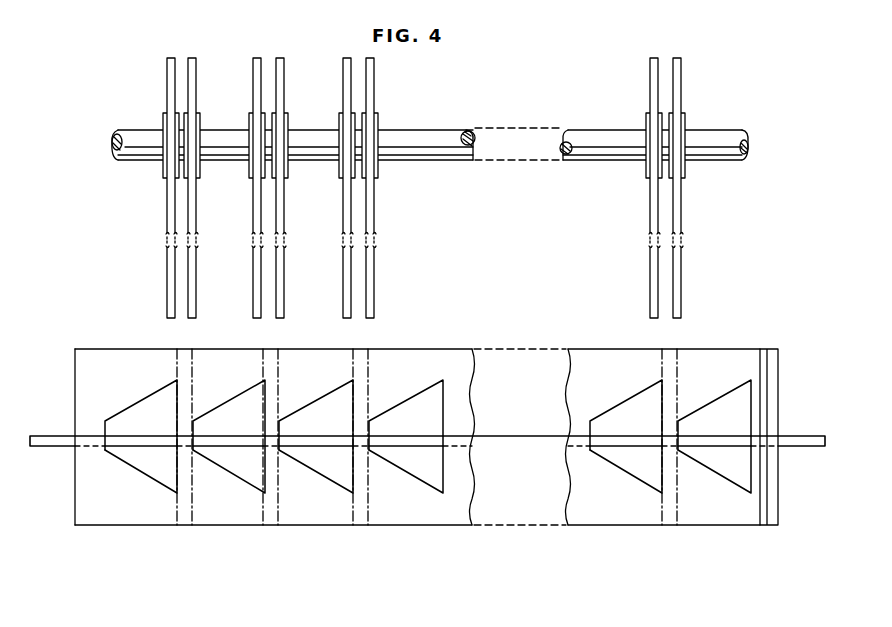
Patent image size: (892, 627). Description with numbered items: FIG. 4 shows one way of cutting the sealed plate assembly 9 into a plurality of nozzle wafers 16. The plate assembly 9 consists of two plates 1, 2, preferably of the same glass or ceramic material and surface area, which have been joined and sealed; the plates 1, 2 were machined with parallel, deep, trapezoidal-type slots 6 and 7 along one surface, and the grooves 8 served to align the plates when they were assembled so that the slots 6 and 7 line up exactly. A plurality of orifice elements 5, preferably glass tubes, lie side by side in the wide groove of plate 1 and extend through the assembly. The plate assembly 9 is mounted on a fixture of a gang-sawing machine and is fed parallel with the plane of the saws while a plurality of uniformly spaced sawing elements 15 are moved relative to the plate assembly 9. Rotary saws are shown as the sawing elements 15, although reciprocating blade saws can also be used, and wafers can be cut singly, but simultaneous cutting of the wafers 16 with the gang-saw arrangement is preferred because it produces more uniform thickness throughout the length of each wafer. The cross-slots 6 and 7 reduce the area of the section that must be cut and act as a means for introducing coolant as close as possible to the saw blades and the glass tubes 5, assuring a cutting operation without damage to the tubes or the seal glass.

The plate 1 is at (742, 515).
The plate 2 is at (742, 352).
The orifice elements 5 is at (50, 438).
The trapezoidal-type slots 6 is at (142, 478).
The trapezoidal-type slots 7 is at (140, 404).
The grooves 8 is at (770, 395).
The plate assembly 9 is at (106, 540).
The sawing elements 15 is at (190, 214).
The wafers 16 is at (260, 516).